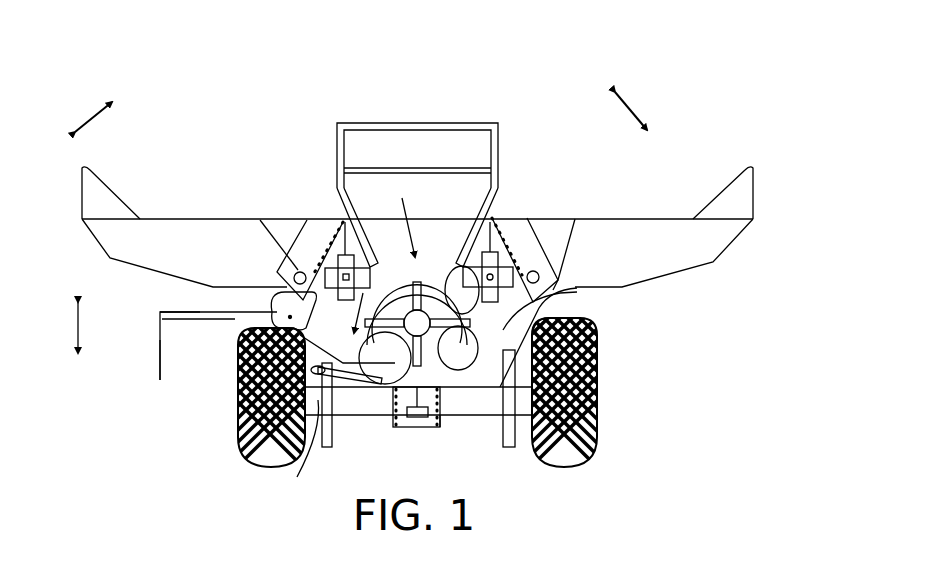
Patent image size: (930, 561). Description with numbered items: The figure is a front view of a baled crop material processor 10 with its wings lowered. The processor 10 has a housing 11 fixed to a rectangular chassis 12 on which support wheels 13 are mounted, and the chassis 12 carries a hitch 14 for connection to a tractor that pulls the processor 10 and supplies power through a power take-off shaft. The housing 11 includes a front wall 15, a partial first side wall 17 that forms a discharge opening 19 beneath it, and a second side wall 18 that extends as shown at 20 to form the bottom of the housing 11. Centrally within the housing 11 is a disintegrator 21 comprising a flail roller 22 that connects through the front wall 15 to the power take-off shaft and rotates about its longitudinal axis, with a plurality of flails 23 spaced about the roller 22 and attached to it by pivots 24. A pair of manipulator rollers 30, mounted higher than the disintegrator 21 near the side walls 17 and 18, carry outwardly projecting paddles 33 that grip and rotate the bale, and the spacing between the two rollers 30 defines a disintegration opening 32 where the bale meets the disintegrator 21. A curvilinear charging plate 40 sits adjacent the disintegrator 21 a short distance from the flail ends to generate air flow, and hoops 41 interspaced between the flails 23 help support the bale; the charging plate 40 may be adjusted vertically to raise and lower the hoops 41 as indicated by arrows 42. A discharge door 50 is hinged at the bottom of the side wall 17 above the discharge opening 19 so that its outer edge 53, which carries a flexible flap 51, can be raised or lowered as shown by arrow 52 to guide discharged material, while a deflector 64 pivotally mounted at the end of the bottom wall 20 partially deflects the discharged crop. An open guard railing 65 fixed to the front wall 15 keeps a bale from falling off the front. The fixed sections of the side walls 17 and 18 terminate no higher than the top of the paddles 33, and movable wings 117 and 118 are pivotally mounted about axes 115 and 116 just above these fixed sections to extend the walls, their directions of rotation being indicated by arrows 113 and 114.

The baled crop material processor 10 is at (598, 70).
The housing 11 is at (380, 218).
The rectangular chassis 12 is at (470, 410).
The support wheels 13 is at (245, 432).
The hitch 14 is at (430, 428).
The front wall 15 is at (555, 318).
The first side wall 17 is at (283, 300).
The second side wall 18 is at (590, 291).
The discharge opening 19 is at (162, 398).
The bottom of the housing 20 is at (470, 336).
The disintegrator 21 is at (392, 355).
The flail roller 22 is at (450, 360).
The flails 23 is at (425, 230).
The pivots 24 is at (443, 423).
The manipulator rollers 30 is at (302, 232).
The disintegration opening 32 is at (420, 218).
The paddles 33 is at (328, 218).
The charging plate 40 is at (362, 405).
The hoops 41 is at (392, 285).
The arrows 42 is at (341, 320).
The discharge door 50 is at (188, 318).
The flap 51 is at (158, 365).
The arrow 52 is at (76, 325).
The outer edge of the discharge door 53 is at (158, 314).
The deflector 64 is at (293, 451).
The open guard railing 65 is at (424, 122).
The arrow 113 is at (90, 116).
The arrow 114 is at (632, 108).
The axis 115 is at (290, 274).
The axis 116 is at (560, 270).
The wing 117 is at (118, 254).
The wing 118 is at (733, 250).